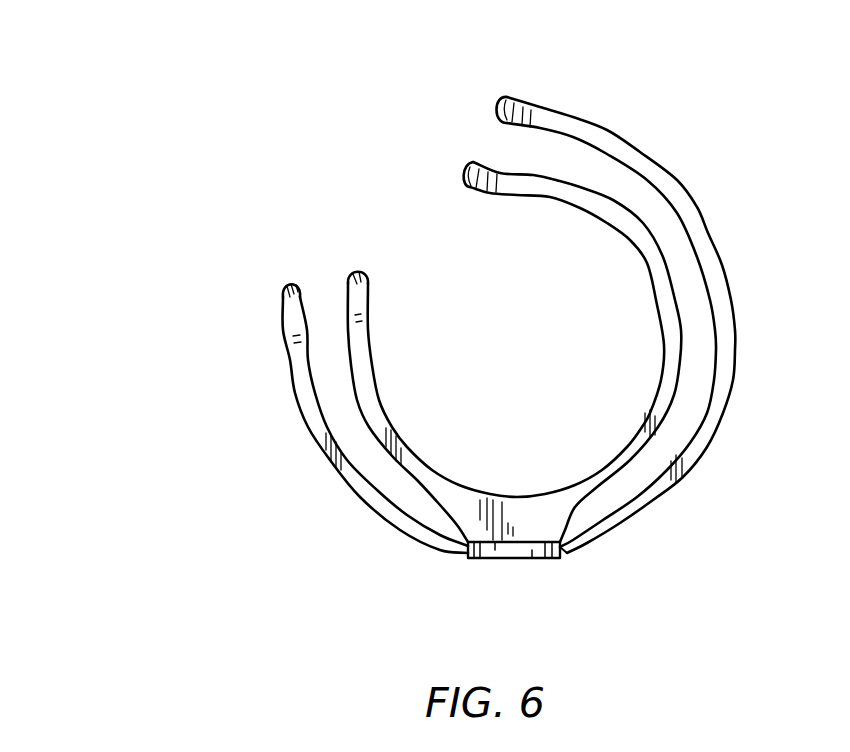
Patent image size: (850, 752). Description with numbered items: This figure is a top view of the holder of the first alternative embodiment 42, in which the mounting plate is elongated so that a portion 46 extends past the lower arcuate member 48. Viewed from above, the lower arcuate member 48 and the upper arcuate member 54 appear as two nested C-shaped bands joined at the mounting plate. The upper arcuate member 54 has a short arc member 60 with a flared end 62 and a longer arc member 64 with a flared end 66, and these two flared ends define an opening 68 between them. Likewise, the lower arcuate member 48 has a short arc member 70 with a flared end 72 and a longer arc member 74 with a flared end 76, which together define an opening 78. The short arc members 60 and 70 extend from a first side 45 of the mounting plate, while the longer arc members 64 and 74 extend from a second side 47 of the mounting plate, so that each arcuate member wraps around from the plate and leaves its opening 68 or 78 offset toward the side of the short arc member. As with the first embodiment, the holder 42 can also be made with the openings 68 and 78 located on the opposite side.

The first alternative embodiment 42 is at (215, 330).
The first side 45 is at (462, 552).
The portion 46 is at (513, 559).
The second side 47 is at (566, 550).
The lower arcuate member 48 is at (765, 359).
The upper arcuate member 54 is at (586, 227).
The short arc member 60 is at (364, 357).
The flared end 62 is at (355, 267).
The longer arc member 64 is at (660, 370).
The flared end 66 is at (467, 162).
The opening 68 is at (462, 266).
The short arc member 70 is at (335, 471).
The flared end 72 is at (283, 286).
The longer arc member 74 is at (620, 142).
The flared end 76 is at (501, 95).
The opening 78 is at (352, 170).